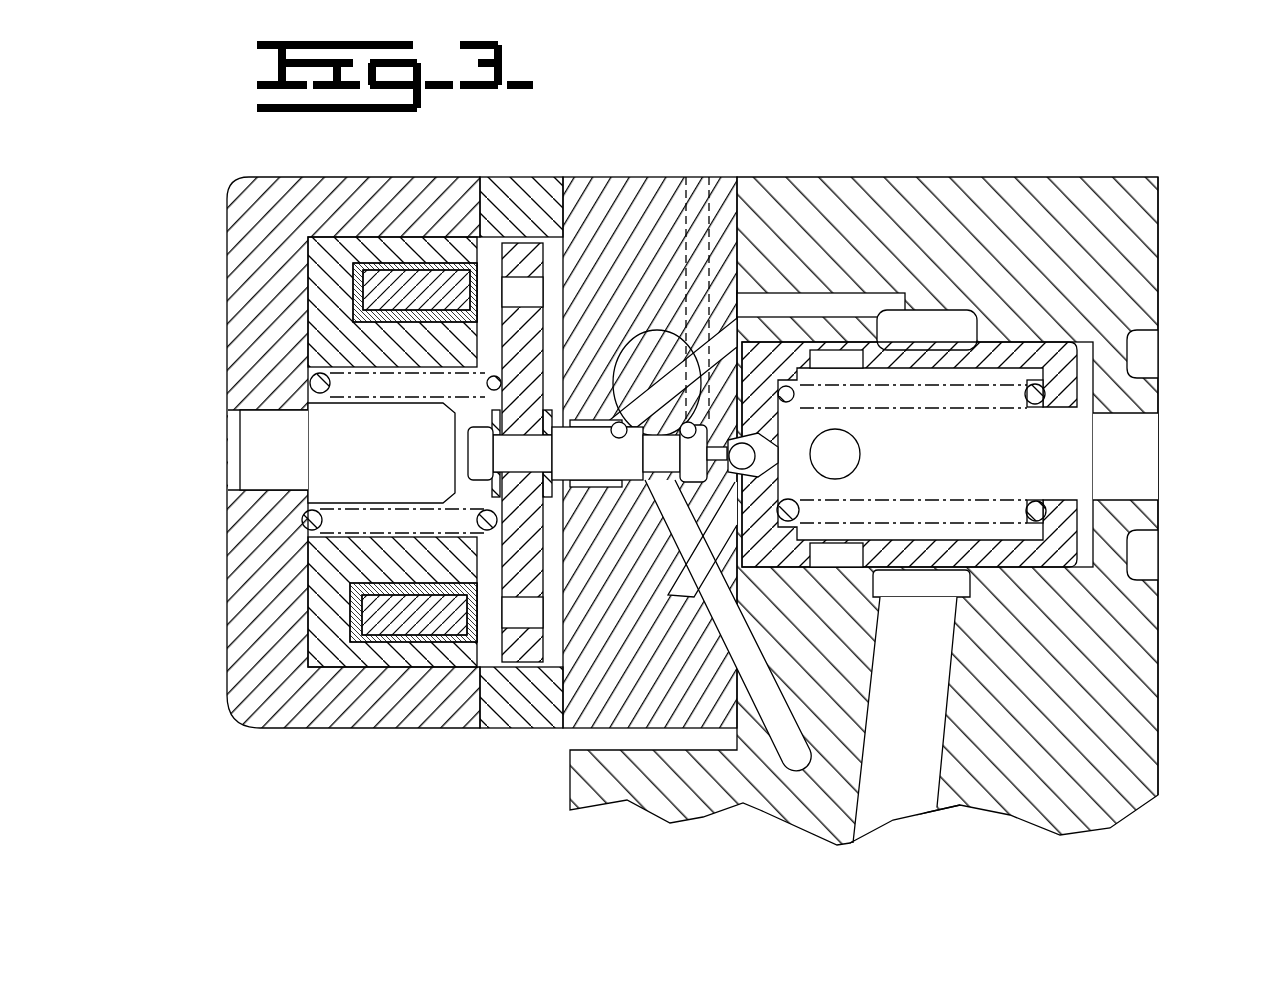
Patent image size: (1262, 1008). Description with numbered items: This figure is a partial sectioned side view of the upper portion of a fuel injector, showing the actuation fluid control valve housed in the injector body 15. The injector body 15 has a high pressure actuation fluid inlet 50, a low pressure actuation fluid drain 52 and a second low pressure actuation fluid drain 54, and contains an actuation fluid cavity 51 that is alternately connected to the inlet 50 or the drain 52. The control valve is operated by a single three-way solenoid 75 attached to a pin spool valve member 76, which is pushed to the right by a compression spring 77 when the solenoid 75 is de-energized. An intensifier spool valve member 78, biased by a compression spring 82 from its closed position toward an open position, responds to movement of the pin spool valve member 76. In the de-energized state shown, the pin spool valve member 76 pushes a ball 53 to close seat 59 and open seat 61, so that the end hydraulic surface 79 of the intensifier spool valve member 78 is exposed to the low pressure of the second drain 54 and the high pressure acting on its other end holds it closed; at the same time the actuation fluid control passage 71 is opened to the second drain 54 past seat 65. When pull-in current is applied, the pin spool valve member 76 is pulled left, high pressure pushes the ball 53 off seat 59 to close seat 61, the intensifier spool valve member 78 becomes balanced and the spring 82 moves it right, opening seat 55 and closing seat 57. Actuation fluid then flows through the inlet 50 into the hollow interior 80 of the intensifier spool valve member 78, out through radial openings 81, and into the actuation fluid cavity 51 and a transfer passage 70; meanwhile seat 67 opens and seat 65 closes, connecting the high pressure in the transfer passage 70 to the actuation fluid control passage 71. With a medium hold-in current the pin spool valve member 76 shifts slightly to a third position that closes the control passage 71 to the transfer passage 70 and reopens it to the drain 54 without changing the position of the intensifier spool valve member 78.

The injector body 15 is at (570, 777).
The actuation fluid inlet 50 is at (1117, 497).
The actuation fluid cavity 51 is at (935, 752).
The actuation fluid drain 52 is at (987, 322).
The ball 53 is at (693, 573).
The second low pressure actuation fluid drain 54 is at (709, 215).
The seat 55 is at (912, 323).
The seat 57 is at (953, 340).
The seat 59 is at (758, 436).
The seat 61 is at (758, 472).
The seat 65 is at (640, 336).
The seat 67 is at (617, 365).
The transfer passage 70 is at (814, 299).
The actuation fluid control passage 71 is at (745, 647).
The three-way solenoid 75 is at (314, 728).
The pin spool valve member 76 is at (590, 482).
The compression spring 77 is at (327, 537).
The intensifier spool valve member 78 is at (935, 330).
The end hydraulic surface 79 is at (735, 582).
The hollow interior 80 is at (953, 462).
The radial openings 81 is at (850, 362).
The compression spring 82 is at (1013, 410).